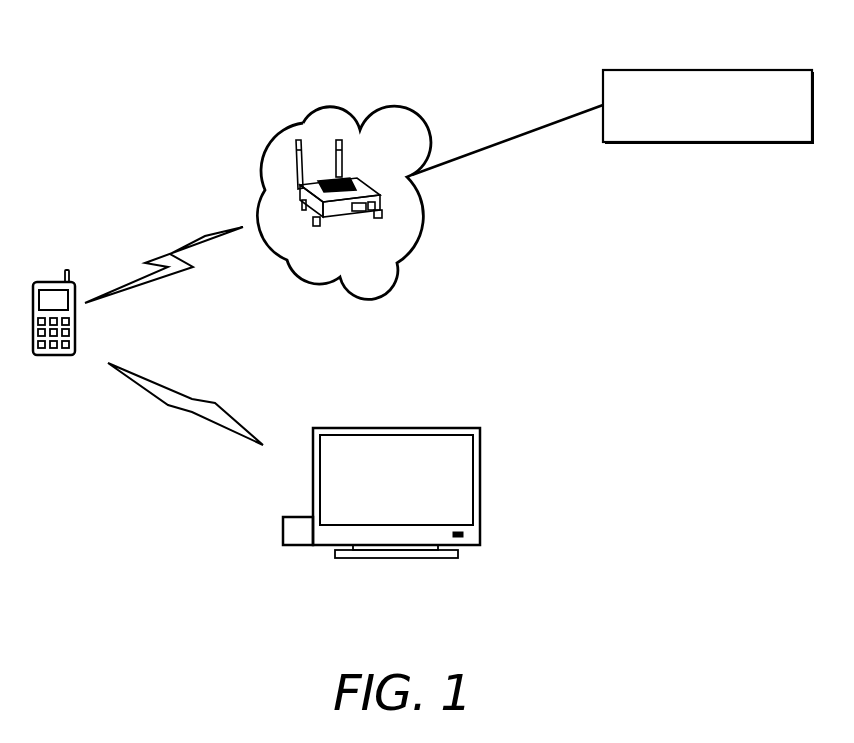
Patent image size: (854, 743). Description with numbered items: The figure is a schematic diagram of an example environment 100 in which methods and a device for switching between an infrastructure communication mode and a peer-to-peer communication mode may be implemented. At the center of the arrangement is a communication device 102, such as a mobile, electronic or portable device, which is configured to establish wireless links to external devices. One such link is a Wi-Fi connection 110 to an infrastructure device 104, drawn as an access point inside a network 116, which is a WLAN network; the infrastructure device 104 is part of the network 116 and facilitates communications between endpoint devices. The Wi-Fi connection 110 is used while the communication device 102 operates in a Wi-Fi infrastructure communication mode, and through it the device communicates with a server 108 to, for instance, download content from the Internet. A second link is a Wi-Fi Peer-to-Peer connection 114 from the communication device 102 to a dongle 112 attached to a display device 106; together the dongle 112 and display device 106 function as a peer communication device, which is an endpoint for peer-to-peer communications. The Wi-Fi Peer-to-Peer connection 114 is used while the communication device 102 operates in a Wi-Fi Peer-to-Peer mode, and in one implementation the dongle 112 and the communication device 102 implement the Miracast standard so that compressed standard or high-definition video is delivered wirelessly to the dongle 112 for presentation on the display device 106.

The system 100 is at (668, 612).
The communication device 102 is at (57, 281).
The infrastructure device 104 is at (350, 217).
The display device 106 is at (480, 487).
The server 108 is at (707, 70).
The Wi-Fi connection 110 is at (185, 245).
The dongle 112 is at (298, 515).
The Wi-Fi Peer-to-Peer connection 114 is at (182, 466).
The network 116 is at (422, 220).